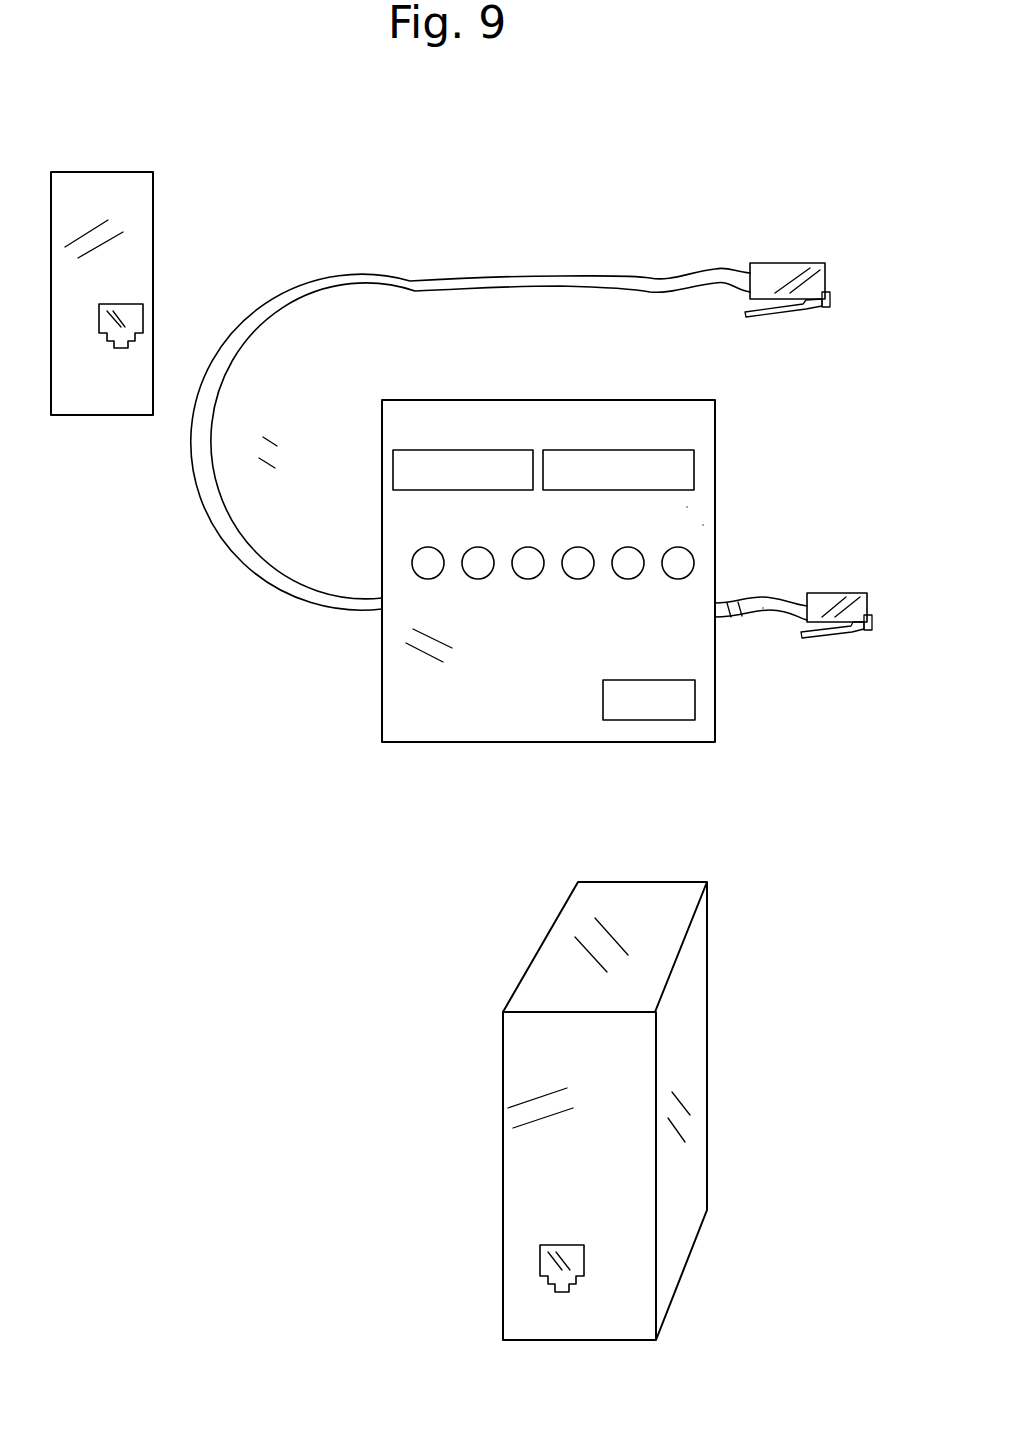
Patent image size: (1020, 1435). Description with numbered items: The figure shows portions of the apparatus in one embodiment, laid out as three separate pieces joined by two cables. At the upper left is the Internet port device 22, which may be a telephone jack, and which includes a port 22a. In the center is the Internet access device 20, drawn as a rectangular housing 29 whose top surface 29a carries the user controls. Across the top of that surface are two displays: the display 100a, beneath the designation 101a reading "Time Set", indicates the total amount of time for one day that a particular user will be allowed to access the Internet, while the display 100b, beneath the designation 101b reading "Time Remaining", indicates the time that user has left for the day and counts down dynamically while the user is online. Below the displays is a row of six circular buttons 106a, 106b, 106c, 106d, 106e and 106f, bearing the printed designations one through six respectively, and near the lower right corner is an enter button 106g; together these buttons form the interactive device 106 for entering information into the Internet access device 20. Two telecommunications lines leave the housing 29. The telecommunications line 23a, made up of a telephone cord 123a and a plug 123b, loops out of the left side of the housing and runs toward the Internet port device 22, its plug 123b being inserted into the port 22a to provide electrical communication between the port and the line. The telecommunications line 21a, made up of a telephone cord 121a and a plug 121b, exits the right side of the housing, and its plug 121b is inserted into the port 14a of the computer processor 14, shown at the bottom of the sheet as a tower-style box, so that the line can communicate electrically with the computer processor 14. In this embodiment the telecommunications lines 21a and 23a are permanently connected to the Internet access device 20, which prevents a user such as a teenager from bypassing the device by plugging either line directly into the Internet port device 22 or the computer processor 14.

The Internet port device 22 is at (97, 186).
The port 22a is at (125, 322).
The telecommunications line 23a is at (553, 274).
The telephone cord 123a is at (468, 288).
The plug 123b is at (776, 268).
The Internet access device 20 is at (672, 400).
The designation 101a is at (442, 412).
The designation 101b is at (600, 410).
The display 100a is at (393, 462).
The display 100b is at (695, 462).
The top surface 29a is at (687, 507).
The housing 29 is at (703, 525).
The interactive device 106 is at (400, 562).
The button 106a is at (423, 553).
The button 106b is at (474, 553).
The button 106c is at (523, 553).
The button 106d is at (573, 553).
The button 106e is at (627, 550).
The button 106f is at (692, 557).
The enter button 106g is at (687, 713).
The telecommunications line 21a is at (741, 602).
The telephone cord 121a is at (763, 609).
The plug 121b is at (858, 598).
The computer processor 14 is at (738, 979).
The port 14a is at (540, 1265).